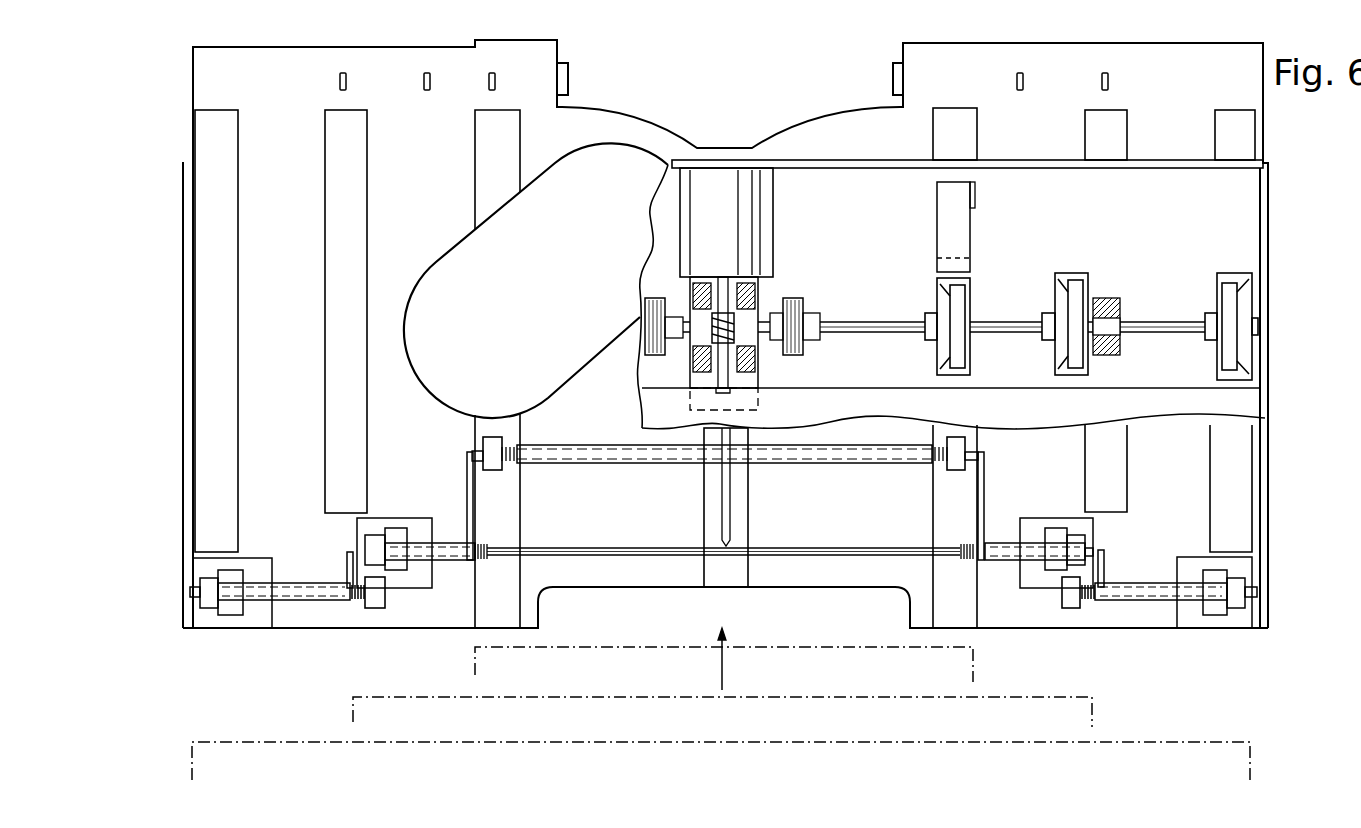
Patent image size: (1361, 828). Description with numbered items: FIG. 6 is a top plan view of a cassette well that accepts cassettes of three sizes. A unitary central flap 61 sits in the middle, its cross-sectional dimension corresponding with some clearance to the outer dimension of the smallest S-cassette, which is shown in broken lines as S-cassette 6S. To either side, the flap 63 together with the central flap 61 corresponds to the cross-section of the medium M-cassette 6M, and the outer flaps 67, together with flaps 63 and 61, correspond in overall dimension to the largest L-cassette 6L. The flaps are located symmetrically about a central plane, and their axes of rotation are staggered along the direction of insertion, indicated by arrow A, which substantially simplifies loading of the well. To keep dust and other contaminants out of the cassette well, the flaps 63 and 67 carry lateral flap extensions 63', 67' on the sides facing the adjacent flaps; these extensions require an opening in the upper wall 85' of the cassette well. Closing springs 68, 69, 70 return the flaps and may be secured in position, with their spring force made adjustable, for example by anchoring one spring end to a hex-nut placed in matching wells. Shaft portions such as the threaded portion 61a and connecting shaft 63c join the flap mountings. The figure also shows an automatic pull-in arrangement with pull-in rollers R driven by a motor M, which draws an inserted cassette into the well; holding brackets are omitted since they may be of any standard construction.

The upper wall of the cassette well 85' is at (245, 331).
The motor M is at (773, 220).
The pull-in rollers R is at (962, 300).
The central flap 61 is at (668, 456).
The threaded shaft portion 61a is at (814, 446).
The closing spring 68 is at (508, 470).
The lateral flap extension 63' is at (731, 506).
The flap 63 is at (729, 570).
The closing spring 69 is at (483, 560).
The connecting shaft 63c is at (870, 546).
The lateral flap extension 67' is at (726, 569).
The flap 67 is at (723, 622).
The closing spring 70 is at (366, 608).
The S-cassette 6S is at (475, 660).
The M-cassette 6M is at (353, 710).
The L-cassette 6L is at (243, 748).
The direction of insertion A is at (696, 659).